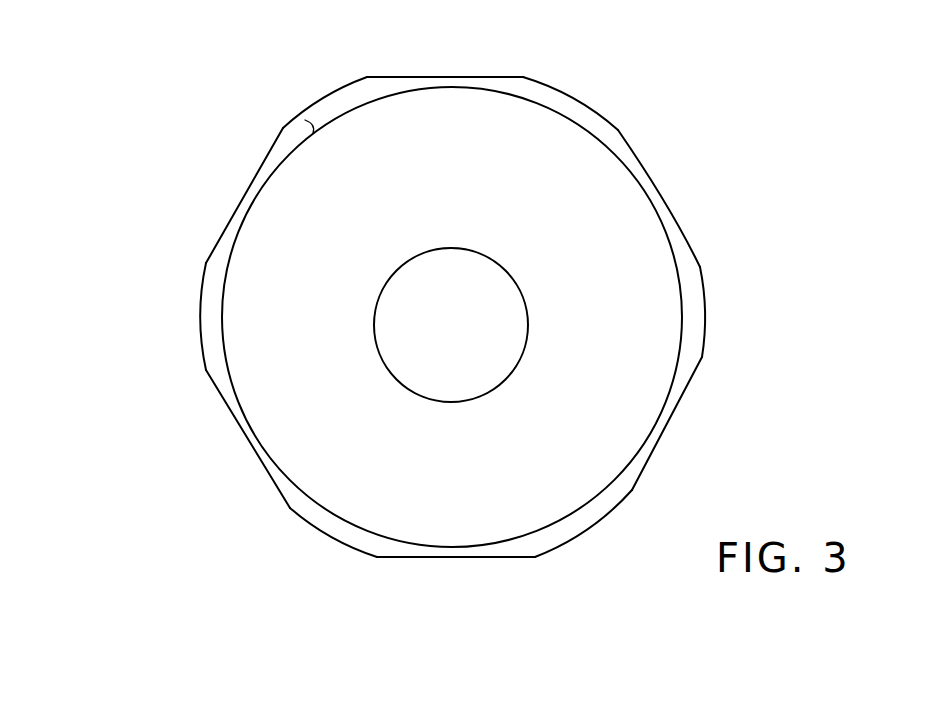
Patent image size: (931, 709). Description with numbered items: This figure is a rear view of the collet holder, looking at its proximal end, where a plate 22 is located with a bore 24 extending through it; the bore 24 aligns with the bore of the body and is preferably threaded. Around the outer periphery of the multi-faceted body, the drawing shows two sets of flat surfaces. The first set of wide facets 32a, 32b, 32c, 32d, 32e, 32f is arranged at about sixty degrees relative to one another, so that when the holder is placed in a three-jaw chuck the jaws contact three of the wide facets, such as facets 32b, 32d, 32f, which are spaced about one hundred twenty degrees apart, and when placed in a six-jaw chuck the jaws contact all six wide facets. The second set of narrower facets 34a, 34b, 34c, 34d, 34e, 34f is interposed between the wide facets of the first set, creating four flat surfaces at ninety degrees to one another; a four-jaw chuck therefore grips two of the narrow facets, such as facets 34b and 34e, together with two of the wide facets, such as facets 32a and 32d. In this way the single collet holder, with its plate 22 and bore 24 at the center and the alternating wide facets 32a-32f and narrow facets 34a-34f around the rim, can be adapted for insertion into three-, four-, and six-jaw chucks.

The plate 22 is at (287, 355).
The bore 24 is at (458, 338).
The facet 32a is at (457, 77).
The facet 32b is at (667, 210).
The facet 32c is at (663, 430).
The facet 32d is at (450, 558).
The facet 32e is at (240, 437).
The facet 32f is at (252, 207).
The facet 34a is at (578, 103).
The facet 34b is at (705, 312).
The facet 34c is at (586, 536).
The facet 34d is at (315, 525).
The facet 34e is at (196, 308).
The facet 34f is at (327, 97).